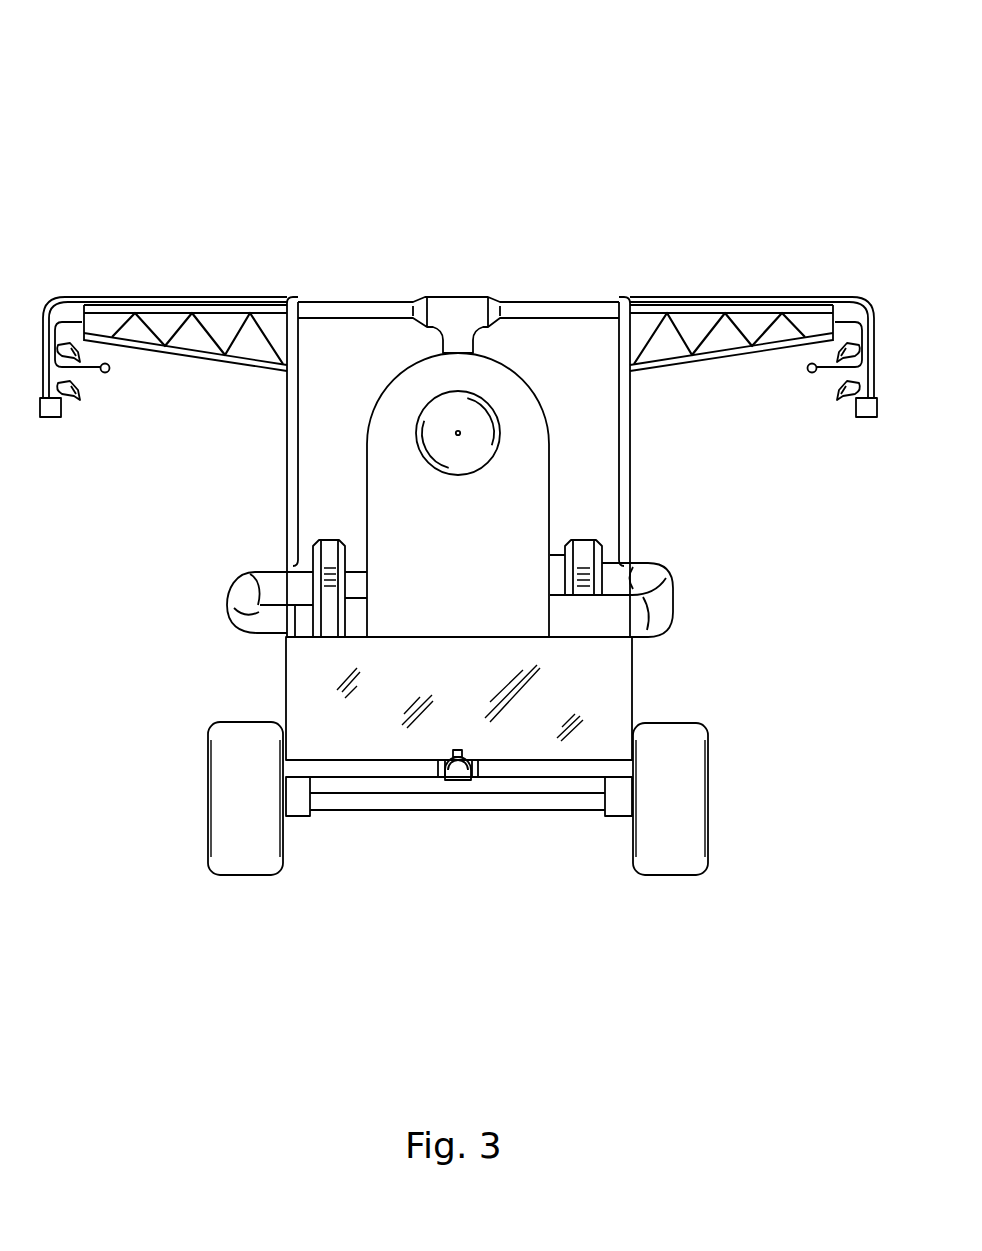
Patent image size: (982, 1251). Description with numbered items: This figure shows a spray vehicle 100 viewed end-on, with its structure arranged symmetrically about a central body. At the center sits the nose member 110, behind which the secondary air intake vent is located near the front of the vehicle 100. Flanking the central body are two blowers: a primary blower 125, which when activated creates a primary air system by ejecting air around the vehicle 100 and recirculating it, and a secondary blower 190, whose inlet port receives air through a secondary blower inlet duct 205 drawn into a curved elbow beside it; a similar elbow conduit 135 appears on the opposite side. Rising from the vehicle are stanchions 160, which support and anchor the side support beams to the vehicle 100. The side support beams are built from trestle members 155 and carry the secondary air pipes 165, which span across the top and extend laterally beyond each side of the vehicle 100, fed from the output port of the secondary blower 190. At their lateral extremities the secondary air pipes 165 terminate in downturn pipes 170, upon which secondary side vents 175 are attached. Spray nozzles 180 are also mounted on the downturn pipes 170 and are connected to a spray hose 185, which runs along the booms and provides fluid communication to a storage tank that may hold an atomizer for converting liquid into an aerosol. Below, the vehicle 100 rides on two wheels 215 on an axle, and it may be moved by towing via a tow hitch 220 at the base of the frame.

The vehicle 100 is at (200, 182).
The nose member 110 is at (437, 412).
The primary blower 125 is at (330, 552).
The left elbow conduit 135 is at (255, 592).
The trestle members 155 is at (218, 325).
The stanchions 160 is at (288, 426).
The secondary air pipes 165 is at (647, 313).
The downturn pipes 170 is at (72, 315).
The secondary side vents 175 is at (77, 351).
The spray nozzles 180 is at (107, 371).
The spray hose 185 is at (247, 294).
The secondary blower 190 is at (583, 550).
The secondary blower inlet duct 205 is at (653, 582).
The wheels 215 is at (230, 745).
The tow hitch 220 is at (457, 770).